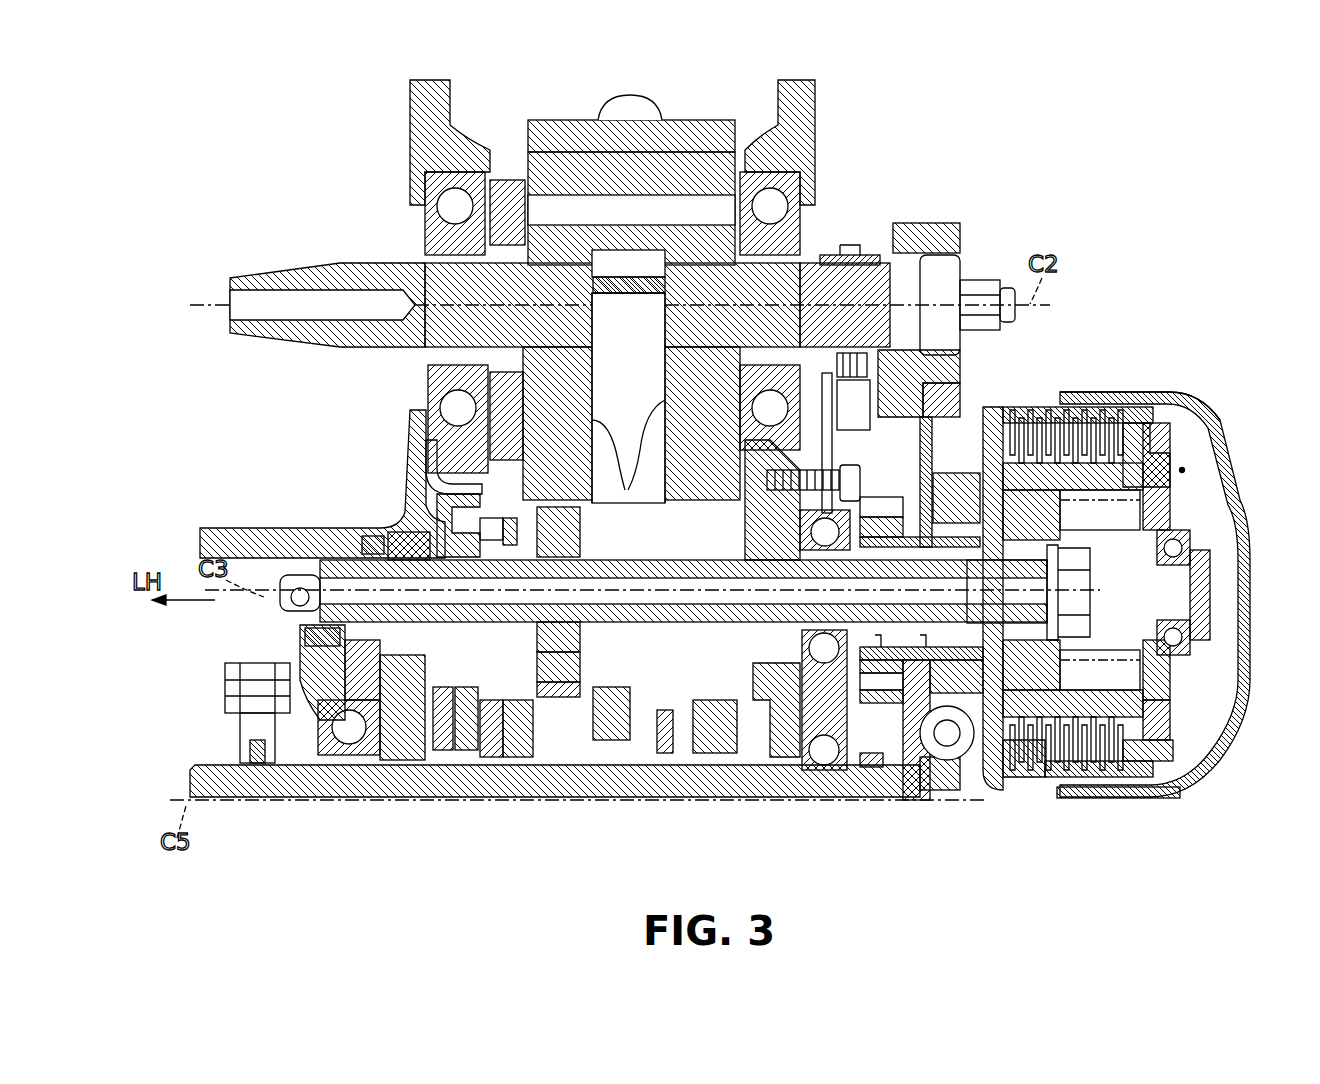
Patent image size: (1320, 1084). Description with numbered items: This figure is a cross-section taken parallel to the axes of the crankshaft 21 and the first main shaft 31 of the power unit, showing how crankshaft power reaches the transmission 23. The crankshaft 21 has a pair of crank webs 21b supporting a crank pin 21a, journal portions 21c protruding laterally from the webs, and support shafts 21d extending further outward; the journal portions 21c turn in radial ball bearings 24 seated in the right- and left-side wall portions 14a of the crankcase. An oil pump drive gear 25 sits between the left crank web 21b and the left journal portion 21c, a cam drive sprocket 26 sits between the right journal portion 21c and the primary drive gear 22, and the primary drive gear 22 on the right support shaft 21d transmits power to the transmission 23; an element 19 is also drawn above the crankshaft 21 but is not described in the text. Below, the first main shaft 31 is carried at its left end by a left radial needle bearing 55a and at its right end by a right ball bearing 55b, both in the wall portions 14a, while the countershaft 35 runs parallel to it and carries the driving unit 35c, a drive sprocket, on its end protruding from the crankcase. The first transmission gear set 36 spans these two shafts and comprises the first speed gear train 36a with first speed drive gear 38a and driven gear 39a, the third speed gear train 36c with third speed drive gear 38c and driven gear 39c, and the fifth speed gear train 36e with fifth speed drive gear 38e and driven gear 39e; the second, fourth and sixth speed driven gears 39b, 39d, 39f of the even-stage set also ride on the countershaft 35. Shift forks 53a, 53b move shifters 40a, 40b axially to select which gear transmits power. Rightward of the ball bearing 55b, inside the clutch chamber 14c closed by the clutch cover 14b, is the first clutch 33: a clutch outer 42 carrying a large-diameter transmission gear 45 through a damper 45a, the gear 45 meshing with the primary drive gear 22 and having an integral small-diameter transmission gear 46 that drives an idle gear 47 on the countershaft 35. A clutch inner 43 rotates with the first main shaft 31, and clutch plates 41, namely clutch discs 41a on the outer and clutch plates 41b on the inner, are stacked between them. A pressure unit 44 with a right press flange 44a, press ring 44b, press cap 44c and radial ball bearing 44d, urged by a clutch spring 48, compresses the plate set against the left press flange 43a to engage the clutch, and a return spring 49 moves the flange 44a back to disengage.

The side wall portion 14a is at (418, 482).
The clutch cover 14b is at (1210, 432).
The clutch chamber 14c is at (1184, 470).
The gear 19 is at (626, 110).
The crankshaft 21 is at (688, 120).
The crank pin 21a is at (745, 165).
The crank web 21b is at (631, 398).
The journal portion 21c is at (436, 276).
The support shaft 21d is at (318, 272).
The primary drive gear 22 is at (960, 236).
The transmission 23 is at (1019, 792).
The radial ball bearing 24 is at (426, 192).
The oil pump drive gear 25 is at (503, 180).
The cam drive sprocket 26 is at (862, 245).
The first main shaft 31 is at (392, 540).
The first clutch 33 is at (1160, 423).
The countershaft 35 is at (211, 798).
The driving unit 35c is at (246, 742).
The first transmission gear set 36 is at (500, 515).
The first speed gear train 36a is at (232, 609).
The third speed gear train 36c is at (672, 645).
The fifth speed gear train 36e is at (334, 860).
The first speed drive gear 38a is at (318, 638).
The third speed drive gear 38c is at (582, 655).
The fifth speed drive gear 38e is at (443, 752).
The first speed driven gear 39a is at (363, 668).
The second speed driven gear 39b is at (778, 760).
The third speed driven gear 39c is at (584, 682).
The fourth speed driven gear 39d is at (612, 742).
The fifth speed driven gear 39e is at (466, 752).
The sixth speed driven gear 39f is at (716, 755).
The shifter 40a is at (625, 600).
The shifter 40b is at (490, 758).
The clutch plates 41 is at (1075, 528).
The clutch disc 41a is at (1073, 410).
The clutch plate 41b is at (1032, 410).
The clutch outer 42 is at (1082, 797).
The clutch inner 43 is at (1128, 738).
The left press flange 43a is at (1000, 772).
The pressure unit 44 is at (1172, 729).
The right press flange 44a is at (1148, 752).
The press ring 44b is at (1162, 668).
The press cap 44c is at (1208, 623).
The radial ball bearing 44d is at (1175, 650).
The large-diameter transmission gear 45 is at (950, 412).
The damper 45a is at (948, 762).
The small-diameter transmission gear 46 is at (880, 500).
The idle gear 47 is at (915, 800).
The clutch spring 48 is at (1108, 665).
The return spring 49 is at (1092, 482).
The shift fork 53a is at (556, 700).
The shift fork 53b is at (518, 758).
The left radial needle bearing 55a is at (360, 540).
The right ball bearing 55b is at (800, 522).